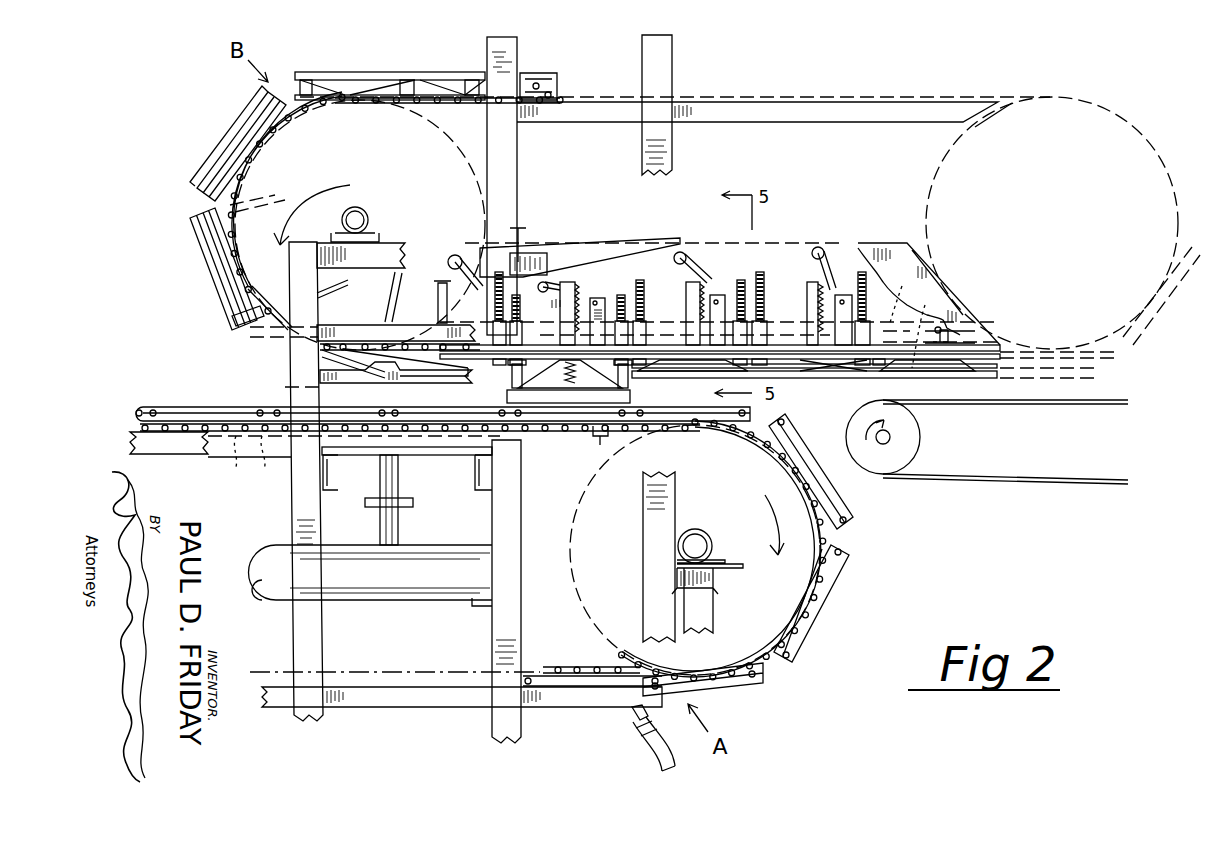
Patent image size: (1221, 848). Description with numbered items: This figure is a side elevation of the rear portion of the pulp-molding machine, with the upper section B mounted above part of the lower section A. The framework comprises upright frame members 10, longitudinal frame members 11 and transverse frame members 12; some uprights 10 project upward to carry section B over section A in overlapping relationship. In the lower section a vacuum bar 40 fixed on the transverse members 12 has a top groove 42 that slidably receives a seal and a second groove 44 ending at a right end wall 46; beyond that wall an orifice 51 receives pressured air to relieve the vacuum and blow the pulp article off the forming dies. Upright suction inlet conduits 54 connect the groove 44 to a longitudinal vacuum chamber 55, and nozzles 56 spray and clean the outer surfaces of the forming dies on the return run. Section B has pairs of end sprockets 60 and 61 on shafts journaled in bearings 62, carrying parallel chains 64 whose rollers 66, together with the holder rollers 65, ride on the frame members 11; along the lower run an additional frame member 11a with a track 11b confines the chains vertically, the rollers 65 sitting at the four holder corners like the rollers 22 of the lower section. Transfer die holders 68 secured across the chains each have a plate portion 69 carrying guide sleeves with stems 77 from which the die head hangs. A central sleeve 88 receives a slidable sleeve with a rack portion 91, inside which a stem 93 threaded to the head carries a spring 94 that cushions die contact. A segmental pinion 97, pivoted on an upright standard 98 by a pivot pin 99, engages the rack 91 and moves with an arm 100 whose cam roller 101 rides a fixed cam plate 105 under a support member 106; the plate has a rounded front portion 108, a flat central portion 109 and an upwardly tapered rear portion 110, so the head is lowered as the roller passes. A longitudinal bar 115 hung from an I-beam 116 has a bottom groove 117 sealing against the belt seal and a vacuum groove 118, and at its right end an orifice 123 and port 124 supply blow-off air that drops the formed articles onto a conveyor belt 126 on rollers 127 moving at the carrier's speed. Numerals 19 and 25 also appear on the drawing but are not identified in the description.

The upright frame members 10 is at (642, 60).
The longitudinal frame members 11 is at (805, 100).
The additional frame member 11a is at (368, 328).
The track 11b is at (438, 345).
The transverse frame members 12 is at (478, 490).
The curved guide rail 19 is at (797, 563).
The rollers 22 is at (755, 685).
The chain guide rail 25 is at (276, 407).
The vacuum bar 40 is at (438, 440).
The top groove 42 is at (226, 464).
The second longitudinal groove 44 is at (263, 464).
The right end wall 46 is at (598, 440).
The orifice 51 is at (622, 437).
The upright suction inlet conduits 54 is at (380, 478).
The longitudinal vacuum chamber 55 is at (380, 600).
The nozzles 56 is at (645, 745).
The end sprockets 60 is at (349, 147).
The end sprockets 61 is at (1138, 152).
The bearings 62 is at (368, 207).
The parallel chains 64 is at (222, 166).
The rollers 65 is at (258, 100).
The rollers 66 is at (262, 135).
The compression or transfer die holders 68 is at (201, 272).
The plate portion 69 is at (790, 372).
The stems 77 is at (512, 380).
The sleeve 88 is at (567, 282).
The rack portion 91 is at (688, 306).
The stem 93 is at (575, 364).
The spring 94 is at (565, 372).
The segmental pinion 97 is at (578, 270).
The upright standard 98 is at (710, 310).
The pivot pin 99 is at (596, 298).
The arm 100 is at (697, 260).
The cam roller 101 is at (682, 251).
The fixed cam plate 105 is at (500, 250).
The support member 106 is at (536, 251).
The rounded front portion 108 is at (458, 254).
The substantially flat central portion 109 is at (542, 309).
The upwardly tapered rear portion 110 is at (644, 258).
The longitudinal bar 115 is at (958, 332).
The longitudinal I-beam 116 is at (870, 243).
The longitudinal bottom groove 117 is at (928, 328).
The second longitudinal groove 118 is at (901, 295).
The bottom opening orifice 123 is at (955, 345).
The port 124 is at (912, 368).
The conveyor belt 126 is at (1072, 398).
The rollers 127 is at (900, 465).